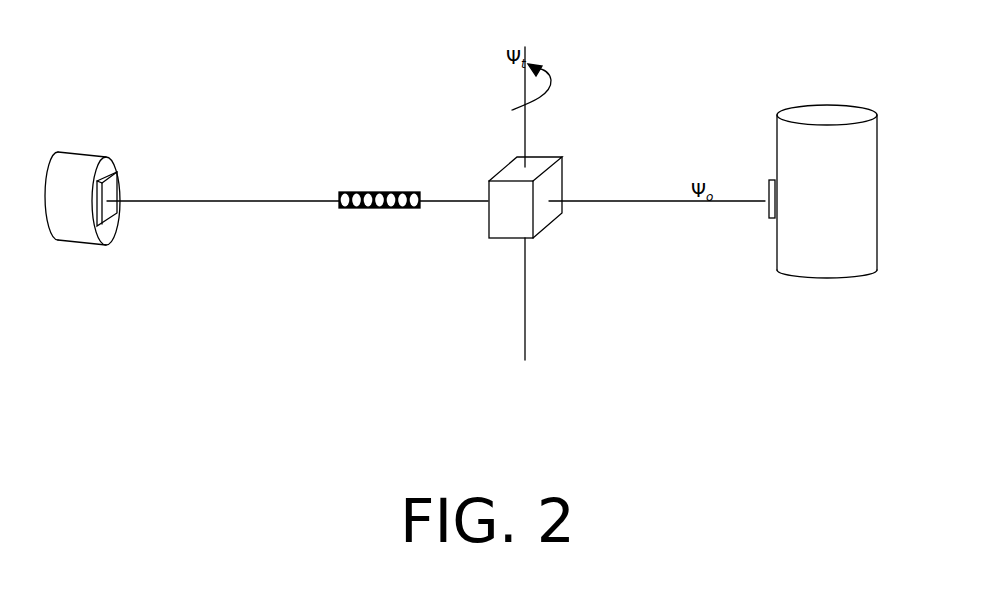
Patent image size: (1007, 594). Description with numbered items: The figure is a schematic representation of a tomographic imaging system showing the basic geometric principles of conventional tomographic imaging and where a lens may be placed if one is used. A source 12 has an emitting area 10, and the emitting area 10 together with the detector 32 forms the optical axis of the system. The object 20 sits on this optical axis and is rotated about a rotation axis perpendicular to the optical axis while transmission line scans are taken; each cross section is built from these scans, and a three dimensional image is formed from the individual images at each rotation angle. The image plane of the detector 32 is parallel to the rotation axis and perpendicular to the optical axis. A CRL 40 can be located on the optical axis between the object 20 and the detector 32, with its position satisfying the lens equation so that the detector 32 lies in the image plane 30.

The detector plate 10 is at (765, 203).
The detector cylinder 12 is at (823, 100).
The sample block 20 is at (485, 227).
The source aperture plate 30 is at (110, 192).
The source cylinder 32 is at (83, 247).
The coil 40 is at (398, 180).